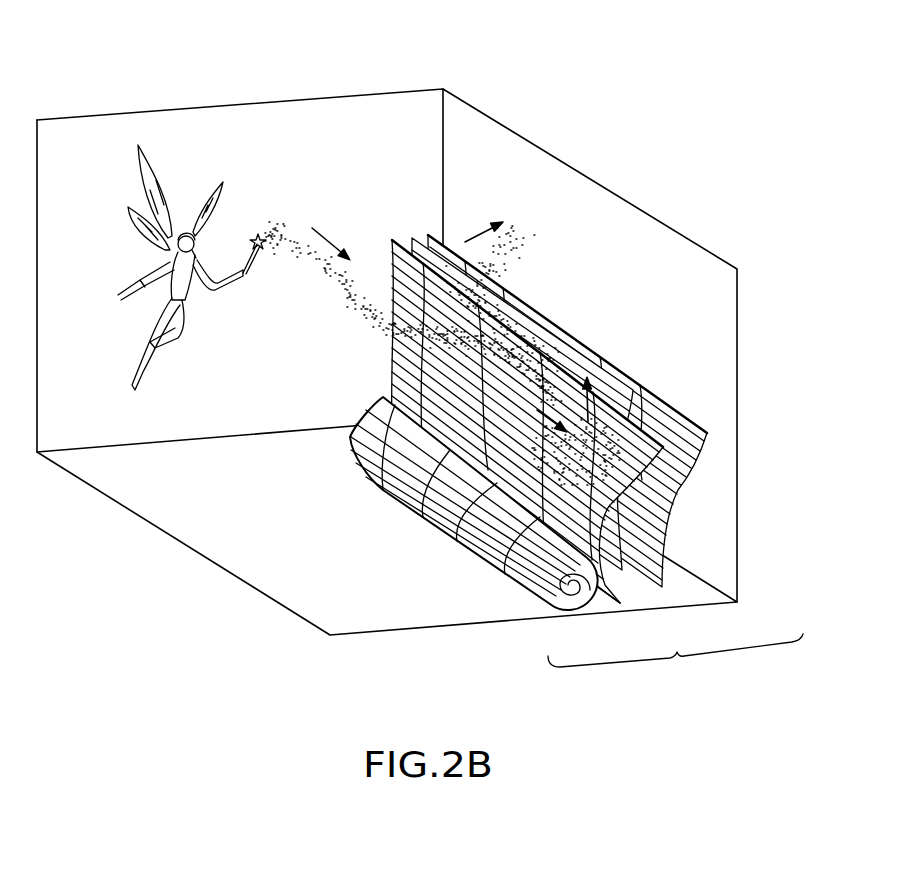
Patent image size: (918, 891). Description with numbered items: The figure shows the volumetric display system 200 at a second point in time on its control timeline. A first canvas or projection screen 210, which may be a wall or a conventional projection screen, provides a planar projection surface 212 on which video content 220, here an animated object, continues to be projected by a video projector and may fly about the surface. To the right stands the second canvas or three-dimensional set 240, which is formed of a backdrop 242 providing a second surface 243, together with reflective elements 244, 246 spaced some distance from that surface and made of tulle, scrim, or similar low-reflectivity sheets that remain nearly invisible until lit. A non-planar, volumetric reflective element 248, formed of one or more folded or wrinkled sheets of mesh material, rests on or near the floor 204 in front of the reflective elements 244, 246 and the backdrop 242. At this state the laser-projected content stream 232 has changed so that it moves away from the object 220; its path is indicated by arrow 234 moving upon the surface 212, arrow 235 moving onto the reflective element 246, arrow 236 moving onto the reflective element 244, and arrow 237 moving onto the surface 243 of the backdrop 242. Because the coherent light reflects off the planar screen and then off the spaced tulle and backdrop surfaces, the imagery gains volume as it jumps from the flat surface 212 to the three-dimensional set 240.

The volumetric display system 200 is at (592, 77).
The floor 204 is at (187, 477).
The projection screen 210 is at (288, 100).
The projection surface 212 is at (167, 117).
The video content 220 is at (122, 245).
The projected content stream 232 is at (306, 283).
The arrow 234 is at (323, 236).
The arrow 235 is at (548, 416).
The arrow 236 is at (598, 407).
The arrow 237 is at (465, 242).
The 3D set 240 is at (675, 662).
The backdrop 242 is at (738, 398).
The second surface 243 is at (722, 460).
The reflective element 244 is at (670, 507).
The reflective element 246 is at (622, 586).
The volumetric reflective element 248 is at (509, 589).